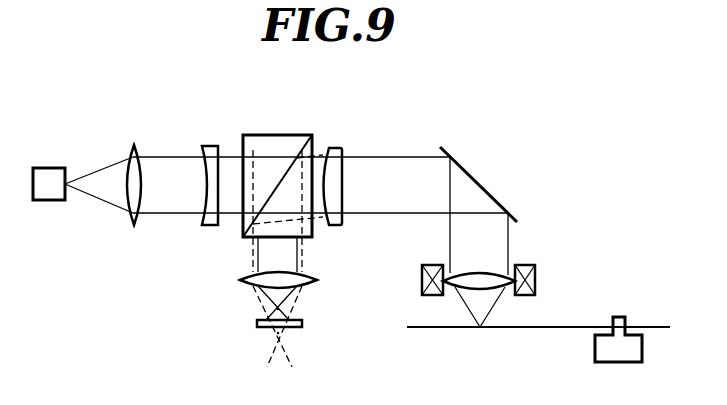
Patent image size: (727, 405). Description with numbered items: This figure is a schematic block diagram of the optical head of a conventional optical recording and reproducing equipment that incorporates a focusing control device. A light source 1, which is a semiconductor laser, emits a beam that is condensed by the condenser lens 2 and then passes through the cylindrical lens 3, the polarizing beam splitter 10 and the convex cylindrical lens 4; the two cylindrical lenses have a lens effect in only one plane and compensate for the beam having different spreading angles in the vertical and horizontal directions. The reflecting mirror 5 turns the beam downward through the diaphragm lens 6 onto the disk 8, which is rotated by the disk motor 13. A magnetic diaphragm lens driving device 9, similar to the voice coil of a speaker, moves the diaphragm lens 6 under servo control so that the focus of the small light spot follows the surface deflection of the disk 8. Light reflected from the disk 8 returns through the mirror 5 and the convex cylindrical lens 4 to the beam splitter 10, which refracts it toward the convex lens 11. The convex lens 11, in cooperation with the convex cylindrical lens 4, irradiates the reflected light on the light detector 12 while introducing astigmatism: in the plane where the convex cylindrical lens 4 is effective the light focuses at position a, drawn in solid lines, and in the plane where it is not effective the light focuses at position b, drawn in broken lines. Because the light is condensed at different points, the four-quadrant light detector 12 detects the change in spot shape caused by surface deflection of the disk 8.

The light source 1 is at (44, 168).
The condenser lens 2 is at (135, 146).
The cylindrical lens 3 is at (209, 146).
The polarizing beam splitter 10 is at (272, 135).
The convex cylindrical lens 4 is at (335, 148).
The reflecting mirror 5 is at (480, 182).
The diaphragm lens 6 is at (481, 272).
The magnetic diaphragm lens driving device 9 is at (421, 278).
The disk 8 is at (553, 329).
The disk motor 13 is at (643, 350).
The convex lens 11 is at (246, 280).
The focal point position a is at (285, 310).
The light detector 12 is at (257, 324).
The focal point position b is at (283, 333).